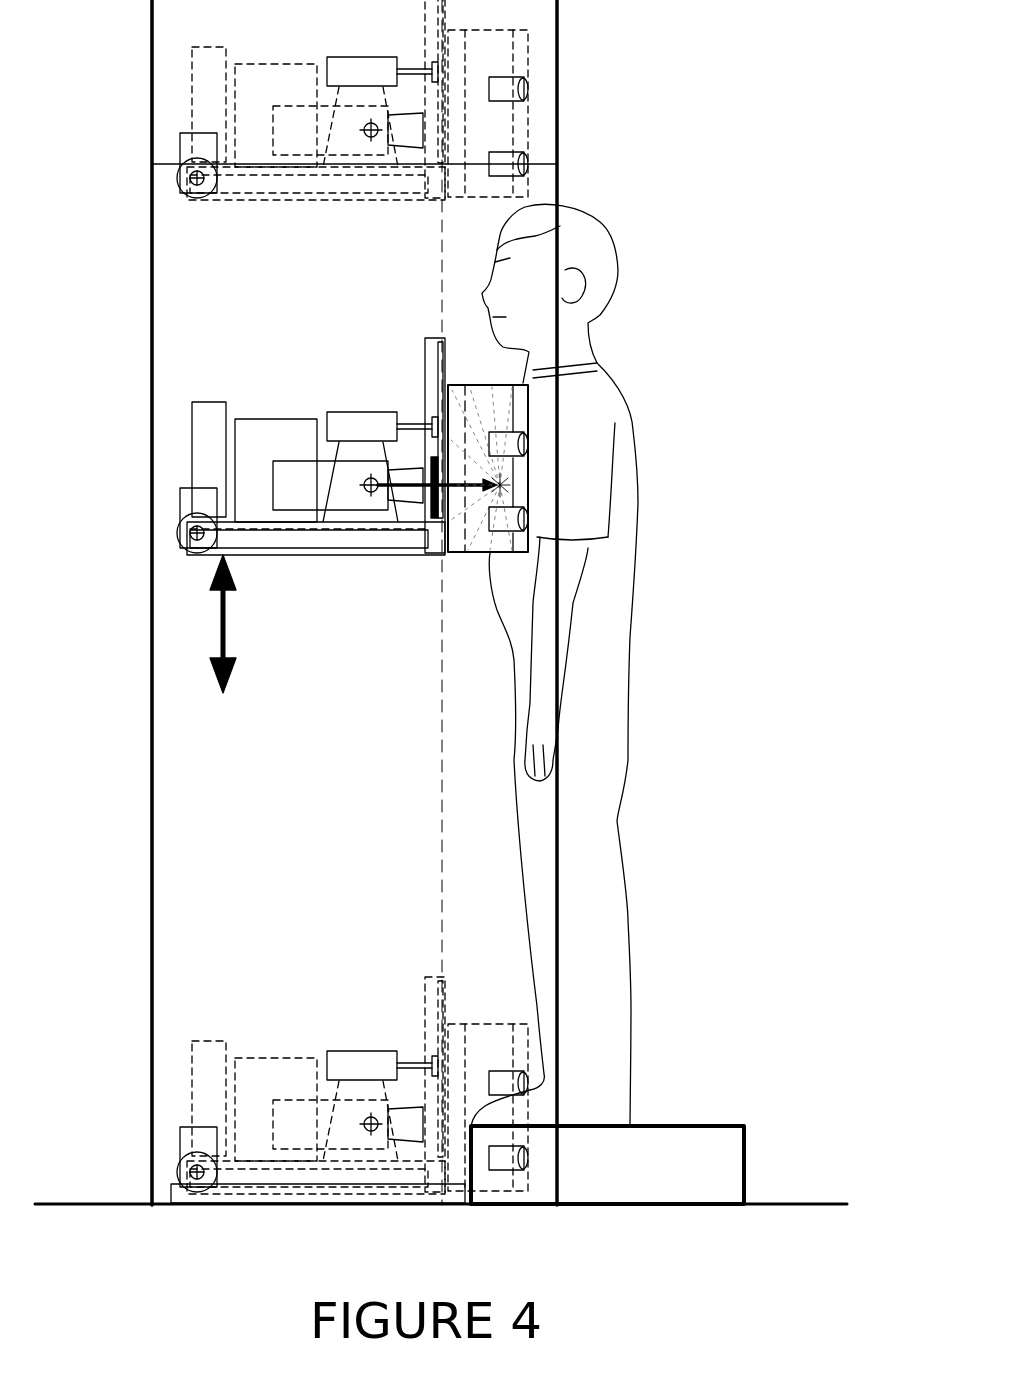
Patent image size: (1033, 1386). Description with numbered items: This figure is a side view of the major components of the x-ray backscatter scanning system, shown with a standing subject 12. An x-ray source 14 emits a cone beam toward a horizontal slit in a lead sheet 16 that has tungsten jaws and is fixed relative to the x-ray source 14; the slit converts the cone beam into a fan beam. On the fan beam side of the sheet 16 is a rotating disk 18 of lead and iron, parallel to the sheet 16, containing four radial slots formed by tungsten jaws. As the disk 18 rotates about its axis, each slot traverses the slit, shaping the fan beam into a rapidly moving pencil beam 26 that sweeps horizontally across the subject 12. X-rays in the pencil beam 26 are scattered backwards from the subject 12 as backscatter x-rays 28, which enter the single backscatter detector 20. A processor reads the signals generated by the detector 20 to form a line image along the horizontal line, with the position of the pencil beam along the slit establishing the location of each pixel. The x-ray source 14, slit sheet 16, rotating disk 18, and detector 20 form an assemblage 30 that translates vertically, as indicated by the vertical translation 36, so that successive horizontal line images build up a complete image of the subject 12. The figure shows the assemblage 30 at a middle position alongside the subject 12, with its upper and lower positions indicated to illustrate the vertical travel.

The subject 12 is at (610, 400).
The x-ray source 14 is at (355, 471).
The lead sheet 16 is at (435, 518).
The rotating disk 18 is at (437, 357).
The backscatter detector 20 is at (508, 548).
The pencil beam 26 is at (455, 488).
The backscatter x-rays 28 is at (505, 470).
The assemblage 30 is at (170, 489).
The vertical translation 36 is at (226, 622).